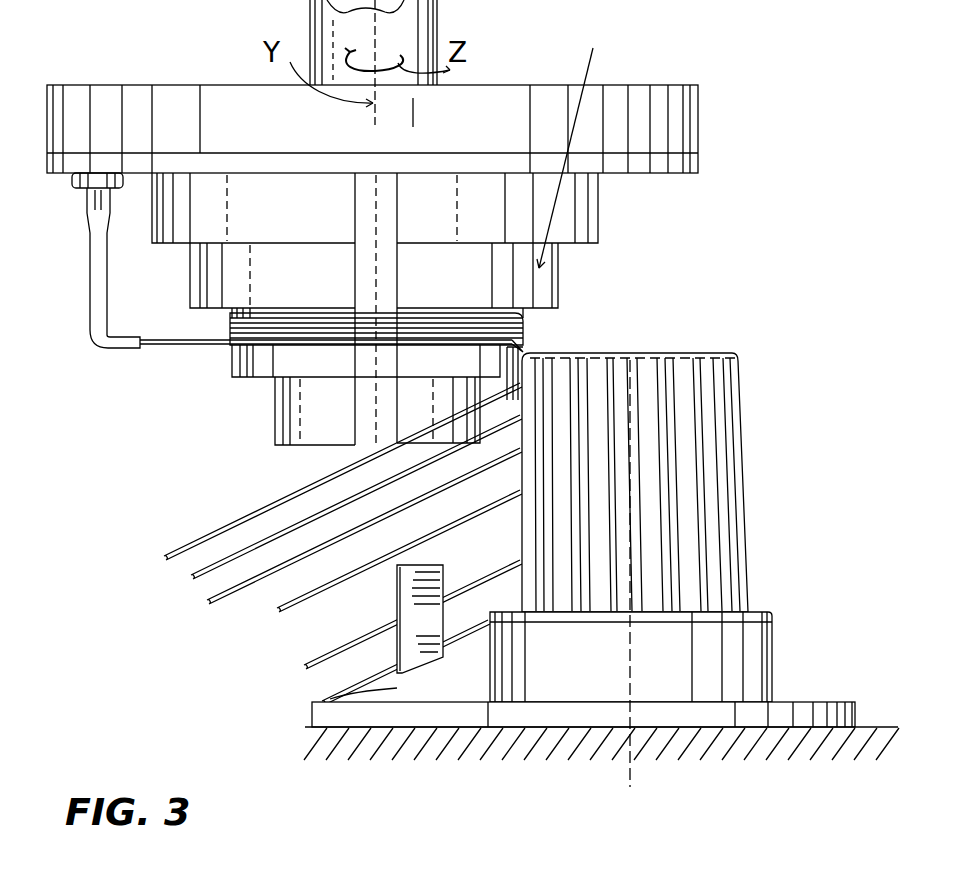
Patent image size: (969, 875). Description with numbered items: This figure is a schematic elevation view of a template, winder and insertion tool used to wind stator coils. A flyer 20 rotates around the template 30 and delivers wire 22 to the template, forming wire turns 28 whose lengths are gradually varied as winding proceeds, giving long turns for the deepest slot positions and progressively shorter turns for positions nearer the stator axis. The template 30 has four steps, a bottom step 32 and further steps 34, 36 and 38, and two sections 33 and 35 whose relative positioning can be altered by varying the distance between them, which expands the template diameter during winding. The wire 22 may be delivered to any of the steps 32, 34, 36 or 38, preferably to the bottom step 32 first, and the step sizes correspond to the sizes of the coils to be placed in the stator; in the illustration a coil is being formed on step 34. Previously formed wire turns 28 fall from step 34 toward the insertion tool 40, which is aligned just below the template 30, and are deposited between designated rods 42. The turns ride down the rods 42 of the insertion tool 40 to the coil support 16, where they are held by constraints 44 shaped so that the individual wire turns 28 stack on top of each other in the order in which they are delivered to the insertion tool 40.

The coil support 16 is at (323, 703).
The flyer 20 is at (97, 348).
The wire 22 is at (173, 350).
The wire turns 28 is at (233, 627).
The template 30 is at (592, 208).
The bottom step 32 is at (530, 387).
The template section 33 is at (297, 447).
The template step 34 is at (518, 352).
The template section 35 is at (410, 405).
The template step 36 is at (560, 277).
The template step 38 is at (602, 233).
The insertion tool 40 is at (826, 516).
The rods 42 is at (520, 383).
The constraints 44 is at (407, 573).